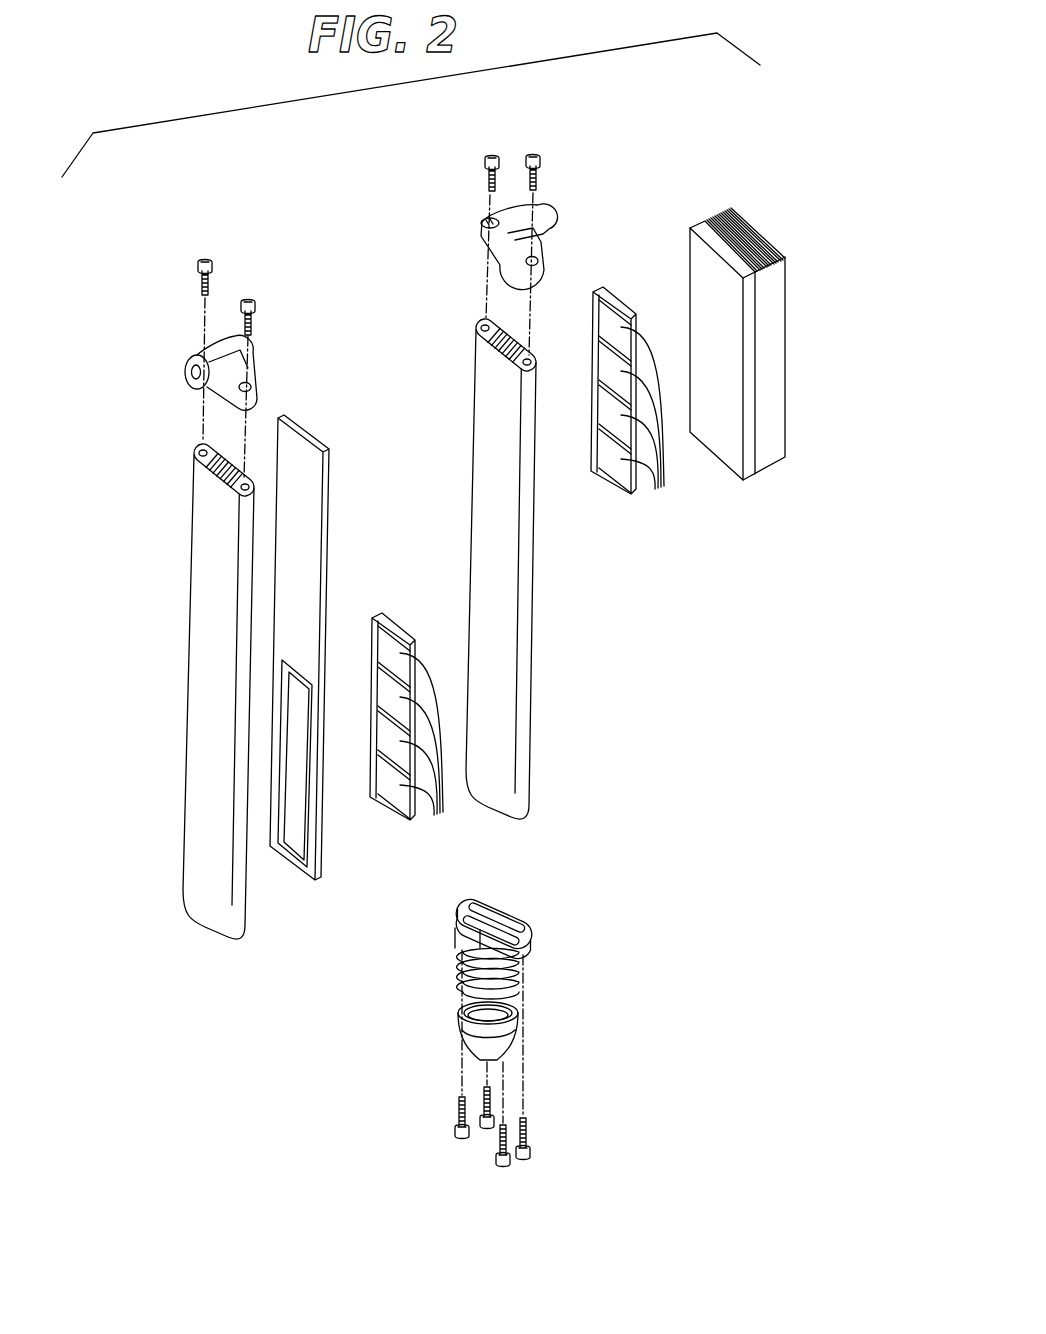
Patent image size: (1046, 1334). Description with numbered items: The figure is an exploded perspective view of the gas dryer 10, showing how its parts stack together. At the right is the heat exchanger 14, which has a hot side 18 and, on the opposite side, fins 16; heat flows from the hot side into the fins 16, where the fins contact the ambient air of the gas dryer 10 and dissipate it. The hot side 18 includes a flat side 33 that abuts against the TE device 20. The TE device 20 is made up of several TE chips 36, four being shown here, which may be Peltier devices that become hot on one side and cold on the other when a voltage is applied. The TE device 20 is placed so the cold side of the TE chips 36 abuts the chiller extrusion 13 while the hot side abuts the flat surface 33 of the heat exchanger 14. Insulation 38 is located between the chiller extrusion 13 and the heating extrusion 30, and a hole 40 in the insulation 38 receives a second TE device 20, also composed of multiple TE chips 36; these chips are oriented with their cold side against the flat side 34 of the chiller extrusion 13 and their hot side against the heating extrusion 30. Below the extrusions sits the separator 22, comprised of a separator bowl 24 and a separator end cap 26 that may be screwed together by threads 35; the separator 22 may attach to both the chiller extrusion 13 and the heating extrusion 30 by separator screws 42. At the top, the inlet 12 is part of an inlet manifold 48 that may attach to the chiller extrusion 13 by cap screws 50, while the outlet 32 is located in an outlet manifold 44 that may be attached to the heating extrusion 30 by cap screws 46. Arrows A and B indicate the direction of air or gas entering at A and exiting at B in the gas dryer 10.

The gas dryer 10 is at (185, 226).
The inlet 12 is at (553, 218).
The chiller extrusion 13 is at (527, 630).
The heat exchanger 14 is at (783, 237).
The fins 16 is at (783, 265).
The hot side 18 is at (743, 479).
The TE device 20 is at (386, 780).
The separator 22 is at (546, 988).
The separator bowl 24 is at (518, 913).
The separator end cap 26 is at (518, 1021).
The heating extrusion 30 is at (176, 764).
The outlet 32 is at (188, 383).
The flat side 33 is at (692, 297).
The flat side 34 is at (192, 681).
The threads 35 is at (440, 1016).
The TE chips 36 is at (547, 577).
The insulation 38 is at (297, 452).
The hole 40 is at (301, 828).
The separator screws 42 is at (458, 1103).
The outlet manifold 44 is at (200, 342).
The cap screws 46 is at (242, 305).
The inlet manifold 48 is at (482, 236).
The cap screws 50 is at (526, 158).